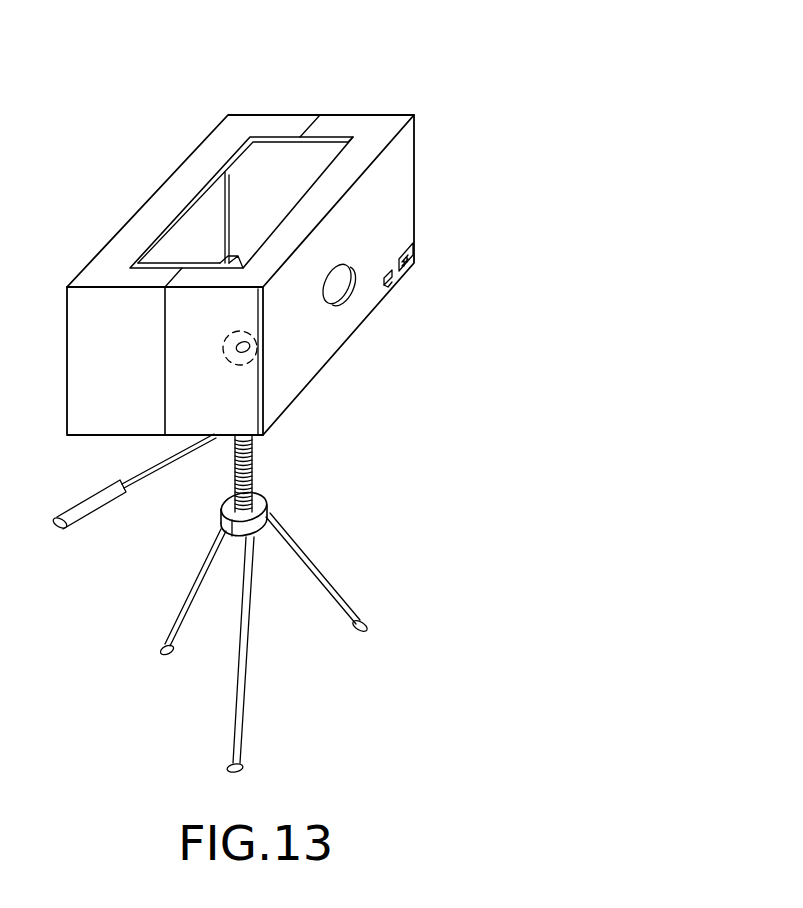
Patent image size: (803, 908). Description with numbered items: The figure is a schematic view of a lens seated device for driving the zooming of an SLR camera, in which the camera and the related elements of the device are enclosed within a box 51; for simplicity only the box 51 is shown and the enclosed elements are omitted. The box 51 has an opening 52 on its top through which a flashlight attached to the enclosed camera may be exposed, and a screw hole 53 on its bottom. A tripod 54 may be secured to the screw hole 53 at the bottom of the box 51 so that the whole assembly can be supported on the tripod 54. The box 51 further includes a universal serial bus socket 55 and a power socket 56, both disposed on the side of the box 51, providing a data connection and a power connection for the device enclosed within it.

The box 51 is at (715, 811).
The opening 52 is at (343, 139).
The screw hole 53 is at (248, 357).
The tripod 54 is at (320, 568).
The universal serial bus (USB) socket 55 is at (395, 287).
The power socket 56 is at (411, 266).